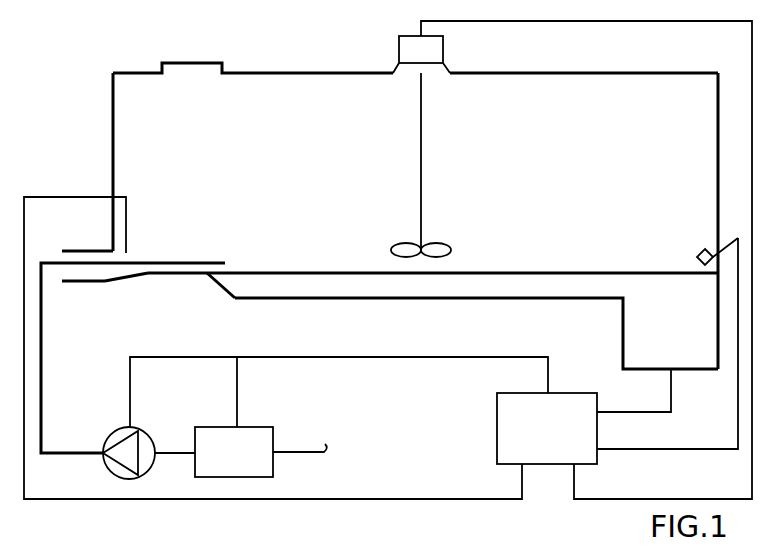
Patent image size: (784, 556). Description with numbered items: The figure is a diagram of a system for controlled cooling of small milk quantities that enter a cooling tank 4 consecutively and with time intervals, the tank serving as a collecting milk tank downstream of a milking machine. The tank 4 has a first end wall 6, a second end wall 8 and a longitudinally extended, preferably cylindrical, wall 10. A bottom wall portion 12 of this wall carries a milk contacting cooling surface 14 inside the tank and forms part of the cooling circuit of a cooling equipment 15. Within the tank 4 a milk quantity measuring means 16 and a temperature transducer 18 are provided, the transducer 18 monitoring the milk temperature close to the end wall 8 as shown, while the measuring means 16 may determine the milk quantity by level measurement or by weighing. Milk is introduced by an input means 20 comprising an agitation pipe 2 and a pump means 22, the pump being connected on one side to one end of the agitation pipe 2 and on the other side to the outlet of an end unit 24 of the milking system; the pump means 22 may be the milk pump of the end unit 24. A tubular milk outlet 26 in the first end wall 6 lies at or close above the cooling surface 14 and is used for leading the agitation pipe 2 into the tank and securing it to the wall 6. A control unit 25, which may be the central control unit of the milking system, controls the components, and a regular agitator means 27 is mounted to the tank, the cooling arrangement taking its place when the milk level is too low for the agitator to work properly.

The agitation pipe 2 is at (200, 263).
The cooling tank 4 is at (360, 62).
The first end wall 6 is at (113, 146).
The second end wall 8 is at (719, 80).
The longitudinally extended wall 10 is at (274, 58).
The bottom wall portion 12 is at (178, 280).
The cooling surface 14 is at (503, 272).
The cooling equipment 15 is at (623, 332).
The milk quantity measuring means 16 is at (127, 250).
The temperature transducer 18 is at (698, 255).
The input means 20 is at (288, 401).
The pump means 22 is at (122, 428).
The end unit 24 is at (234, 452).
The control unit 25 is at (547, 428).
The tubular milk outlet 26 is at (85, 283).
The agitator means 27 is at (443, 55).